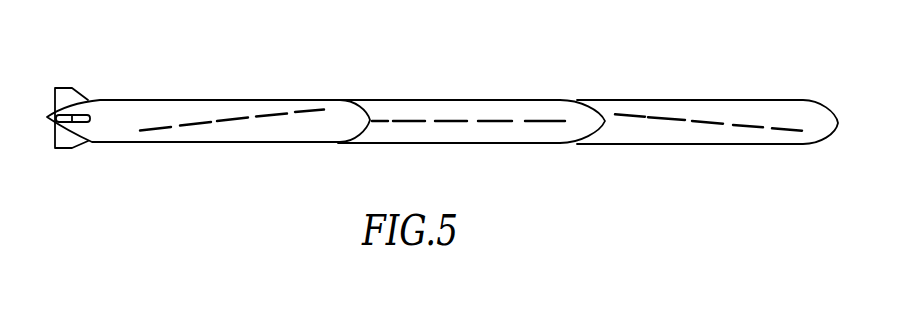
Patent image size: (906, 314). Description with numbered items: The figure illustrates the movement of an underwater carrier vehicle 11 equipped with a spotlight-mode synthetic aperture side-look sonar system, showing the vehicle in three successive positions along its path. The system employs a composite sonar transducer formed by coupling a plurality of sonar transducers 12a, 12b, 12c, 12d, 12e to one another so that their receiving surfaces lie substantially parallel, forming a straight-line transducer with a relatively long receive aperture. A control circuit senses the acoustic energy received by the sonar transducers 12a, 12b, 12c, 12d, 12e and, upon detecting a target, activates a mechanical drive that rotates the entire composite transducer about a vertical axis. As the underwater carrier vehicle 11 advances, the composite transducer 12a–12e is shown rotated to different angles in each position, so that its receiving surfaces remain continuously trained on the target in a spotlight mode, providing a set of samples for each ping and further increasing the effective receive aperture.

The underwater carrier vehicle 11 is at (95, 91).
The sonar transducer 12a is at (147, 128).
The sonar transducer 12b is at (190, 123).
The sonar transducer 12c is at (228, 120).
The sonar transducer 12d is at (267, 116).
The sonar transducer 12e is at (307, 110).